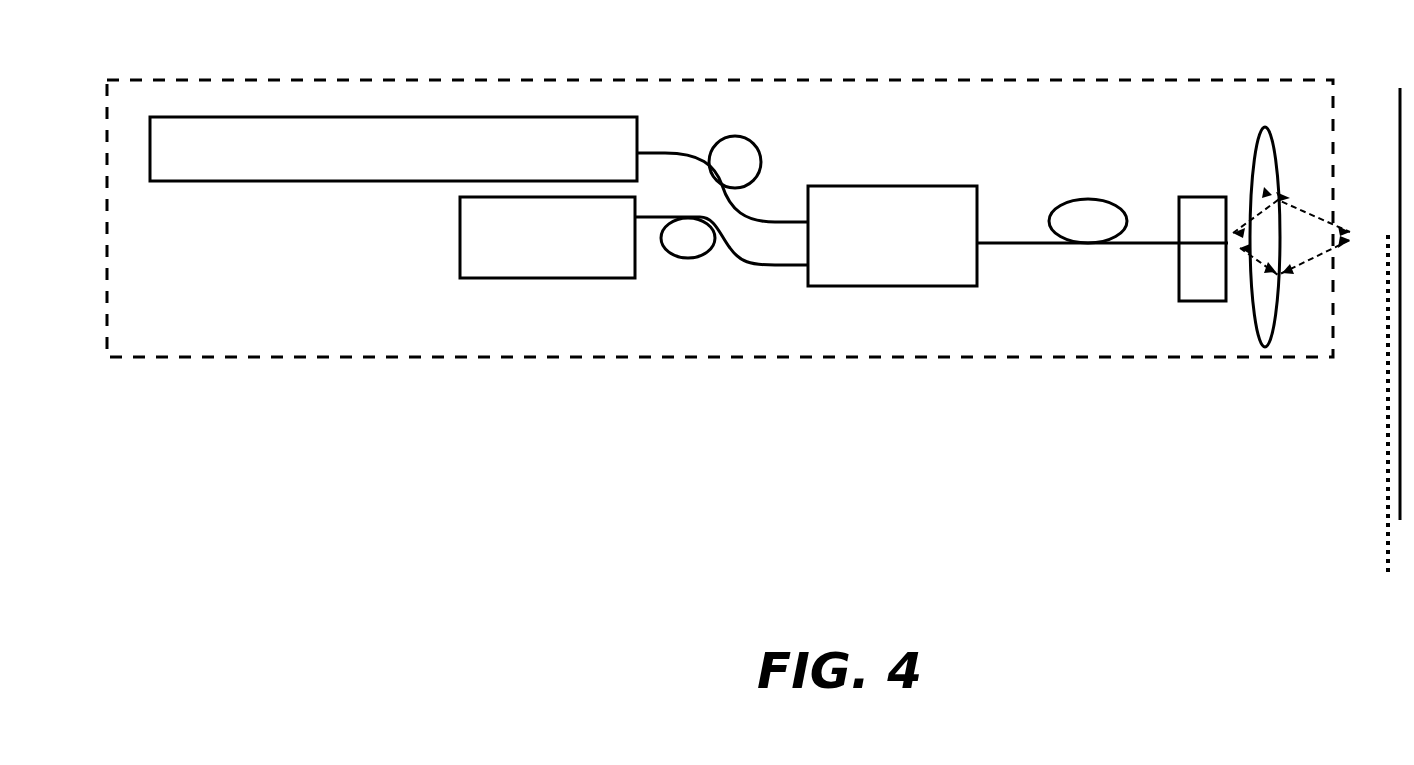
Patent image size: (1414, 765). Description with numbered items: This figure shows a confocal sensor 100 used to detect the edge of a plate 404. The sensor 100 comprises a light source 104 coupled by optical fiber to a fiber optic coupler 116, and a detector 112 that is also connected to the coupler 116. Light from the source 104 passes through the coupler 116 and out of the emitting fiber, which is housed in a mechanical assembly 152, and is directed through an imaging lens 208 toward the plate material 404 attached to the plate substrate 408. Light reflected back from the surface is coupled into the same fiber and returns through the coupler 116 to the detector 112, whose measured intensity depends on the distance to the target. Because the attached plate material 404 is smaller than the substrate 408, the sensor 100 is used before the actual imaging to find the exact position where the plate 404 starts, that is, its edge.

The confocal sensor 100 is at (200, 396).
The light source 104 is at (479, 169).
The detector 112 is at (634, 237).
The fiber optic coupler 116 is at (1018, 236).
The mechanical assembly 152 is at (1211, 197).
The imaging lens 208 is at (1278, 160).
The plate 404 is at (1387, 458).
The plate substrate 408 is at (1398, 112).